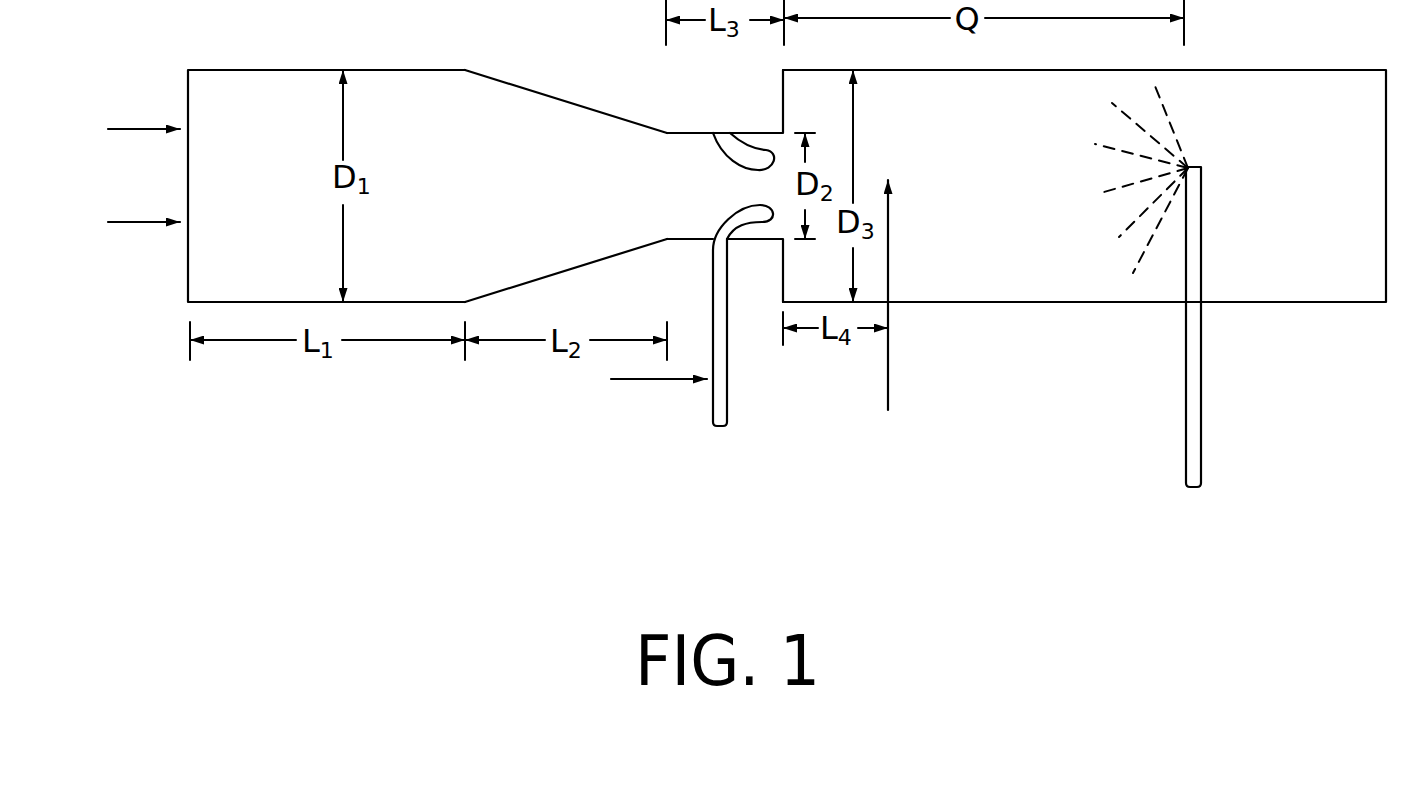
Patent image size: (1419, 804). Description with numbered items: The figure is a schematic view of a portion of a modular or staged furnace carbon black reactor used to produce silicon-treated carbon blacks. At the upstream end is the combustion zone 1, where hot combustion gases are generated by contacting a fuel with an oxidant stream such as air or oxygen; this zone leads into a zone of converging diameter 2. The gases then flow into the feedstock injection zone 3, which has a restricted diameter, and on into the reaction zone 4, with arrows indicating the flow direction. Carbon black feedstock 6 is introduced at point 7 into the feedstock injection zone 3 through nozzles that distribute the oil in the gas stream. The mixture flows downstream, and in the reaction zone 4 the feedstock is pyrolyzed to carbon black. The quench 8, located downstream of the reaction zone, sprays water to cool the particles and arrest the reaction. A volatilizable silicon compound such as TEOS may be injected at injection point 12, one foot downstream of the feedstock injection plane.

The combustion zone 1 is at (232, 204).
The zone of converging diameter 2 is at (536, 206).
The feedstock injection zone 3 is at (686, 206).
The reaction zone 4 is at (964, 206).
The carbon black feedstock 6 is at (720, 433).
The feedstock injection point 7 is at (712, 242).
The quench 8 is at (1192, 168).
The injection point 12 is at (892, 317).